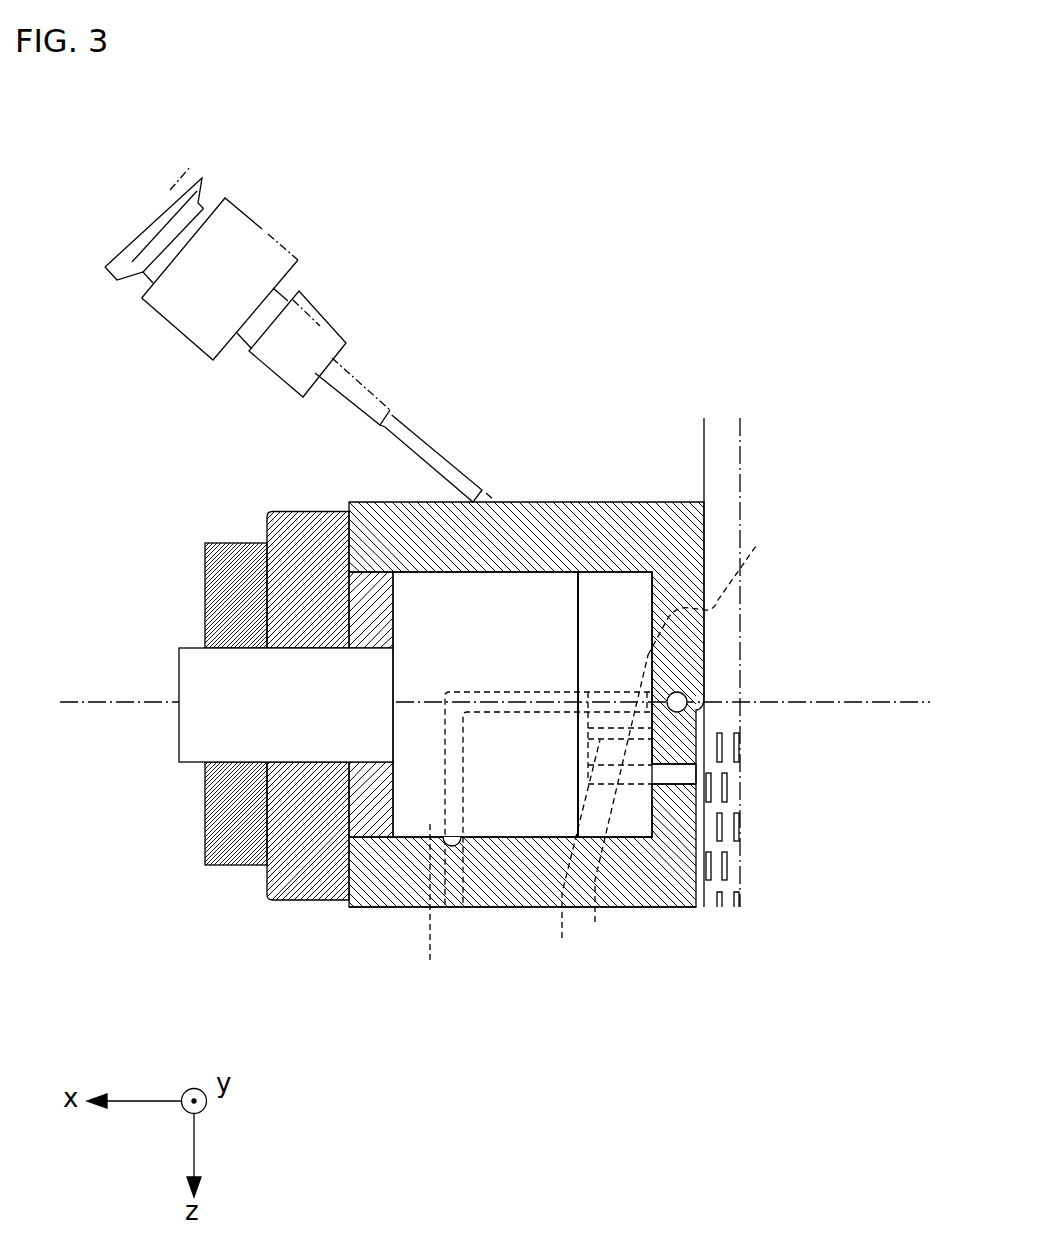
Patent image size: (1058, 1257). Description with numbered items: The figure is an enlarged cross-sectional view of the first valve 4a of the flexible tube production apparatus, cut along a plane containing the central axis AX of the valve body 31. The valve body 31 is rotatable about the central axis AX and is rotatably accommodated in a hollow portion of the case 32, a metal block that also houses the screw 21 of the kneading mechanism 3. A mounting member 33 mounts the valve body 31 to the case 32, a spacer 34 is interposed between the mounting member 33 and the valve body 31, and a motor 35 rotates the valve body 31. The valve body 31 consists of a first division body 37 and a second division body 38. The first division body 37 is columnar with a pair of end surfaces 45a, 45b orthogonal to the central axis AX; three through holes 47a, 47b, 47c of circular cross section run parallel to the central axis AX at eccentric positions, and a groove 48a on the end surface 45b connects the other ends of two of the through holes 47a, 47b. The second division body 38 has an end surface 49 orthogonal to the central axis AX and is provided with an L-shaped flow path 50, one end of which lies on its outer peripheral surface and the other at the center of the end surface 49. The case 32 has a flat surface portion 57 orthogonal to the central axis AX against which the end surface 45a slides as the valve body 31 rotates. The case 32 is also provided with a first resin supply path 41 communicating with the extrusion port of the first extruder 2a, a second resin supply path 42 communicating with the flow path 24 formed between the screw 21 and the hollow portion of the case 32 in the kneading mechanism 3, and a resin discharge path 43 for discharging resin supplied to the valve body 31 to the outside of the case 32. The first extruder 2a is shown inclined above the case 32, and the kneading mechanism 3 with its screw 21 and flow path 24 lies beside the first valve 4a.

The first extruder 2a is at (270, 234).
The kneading mechanism 3 is at (745, 885).
The first valve 4a is at (150, 480).
The screw 21 is at (722, 720).
The flow path 24 is at (700, 815).
The valve body 31 is at (668, 444).
The case 32 is at (358, 502).
The mounting member 33 is at (266, 530).
The spacer 34 is at (350, 586).
The motor 35 is at (203, 631).
The first division body 37 is at (604, 583).
The second division body 38 is at (508, 583).
The first resin supply path 41 is at (704, 692).
The second resin supply path 42 is at (683, 786).
The resin discharge path 43 is at (439, 907).
The end surface 45a is at (644, 835).
The end surface 45b is at (590, 595).
The through hole 47a is at (726, 583).
The through hole 47b is at (566, 855).
The through hole 47c is at (611, 801).
The groove 48a is at (640, 748).
The end surface 49 is at (574, 828).
The flow path 50 is at (382, 910).
The flat surface portion 57 is at (662, 659).
The central axis AX is at (93, 700).